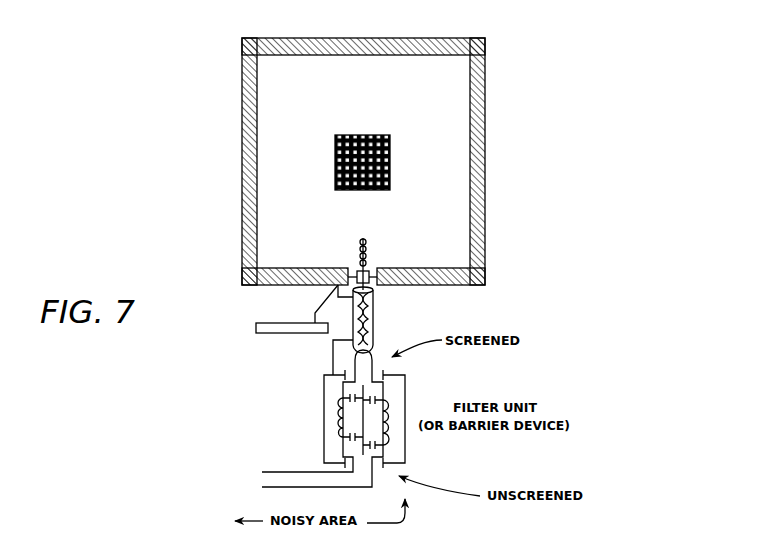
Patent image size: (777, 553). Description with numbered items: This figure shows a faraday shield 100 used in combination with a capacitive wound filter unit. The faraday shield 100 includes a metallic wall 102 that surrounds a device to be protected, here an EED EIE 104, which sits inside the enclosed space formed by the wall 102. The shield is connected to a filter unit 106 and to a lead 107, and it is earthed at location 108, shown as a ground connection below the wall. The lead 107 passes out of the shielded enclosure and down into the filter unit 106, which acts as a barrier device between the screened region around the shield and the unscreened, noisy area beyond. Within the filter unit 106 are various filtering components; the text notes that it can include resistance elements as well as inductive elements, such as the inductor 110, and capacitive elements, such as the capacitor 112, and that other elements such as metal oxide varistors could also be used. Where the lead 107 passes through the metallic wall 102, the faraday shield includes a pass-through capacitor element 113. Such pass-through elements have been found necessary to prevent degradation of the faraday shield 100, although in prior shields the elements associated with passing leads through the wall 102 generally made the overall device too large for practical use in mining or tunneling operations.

The faraday shield 100 is at (512, 144).
The metallic wall 102 is at (485, 88).
The EED EIE 104 is at (365, 137).
The filter unit 106 is at (306, 412).
The lead 107 is at (374, 325).
The earth location 108 is at (314, 313).
The inductor 110 is at (388, 436).
The capacitor 112 is at (374, 399).
The pass-through capacitor element 113 is at (385, 257).